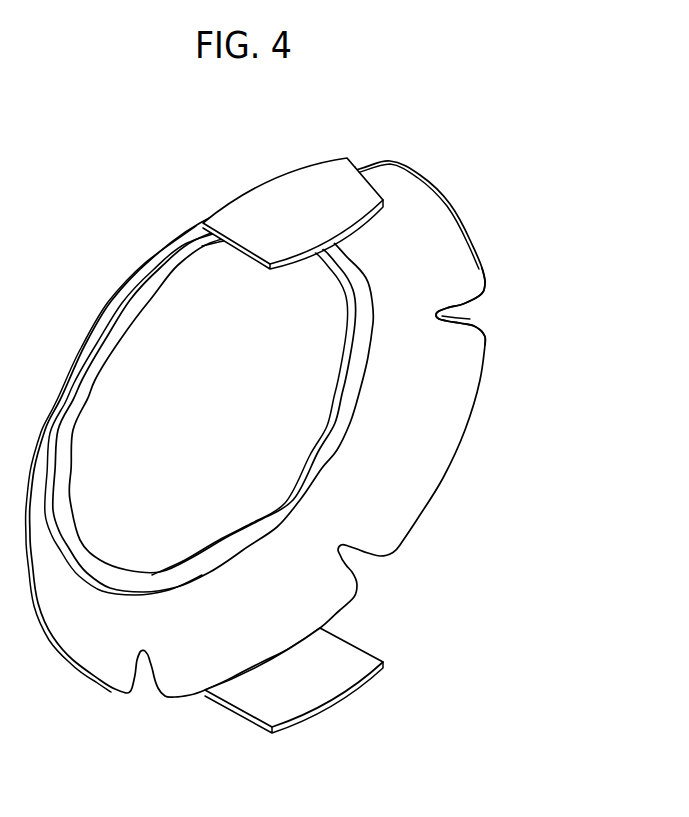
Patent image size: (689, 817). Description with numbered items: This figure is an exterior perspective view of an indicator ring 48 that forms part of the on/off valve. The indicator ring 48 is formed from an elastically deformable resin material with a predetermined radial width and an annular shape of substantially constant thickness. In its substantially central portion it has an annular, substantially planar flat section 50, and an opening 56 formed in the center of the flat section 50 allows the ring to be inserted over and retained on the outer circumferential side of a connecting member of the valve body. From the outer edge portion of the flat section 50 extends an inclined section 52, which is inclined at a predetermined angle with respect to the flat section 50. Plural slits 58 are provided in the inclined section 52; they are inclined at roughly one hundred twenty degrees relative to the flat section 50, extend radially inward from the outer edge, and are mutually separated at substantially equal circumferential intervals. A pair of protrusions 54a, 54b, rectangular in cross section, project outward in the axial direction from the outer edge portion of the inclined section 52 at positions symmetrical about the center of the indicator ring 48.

The indicator ring 48 is at (294, 453).
The flat section 50 is at (355, 383).
The inclined section 52 is at (430, 442).
The protrusion 54a is at (268, 193).
The protrusion 54b is at (322, 683).
The opening 56 is at (240, 530).
The slit 58 is at (477, 312).